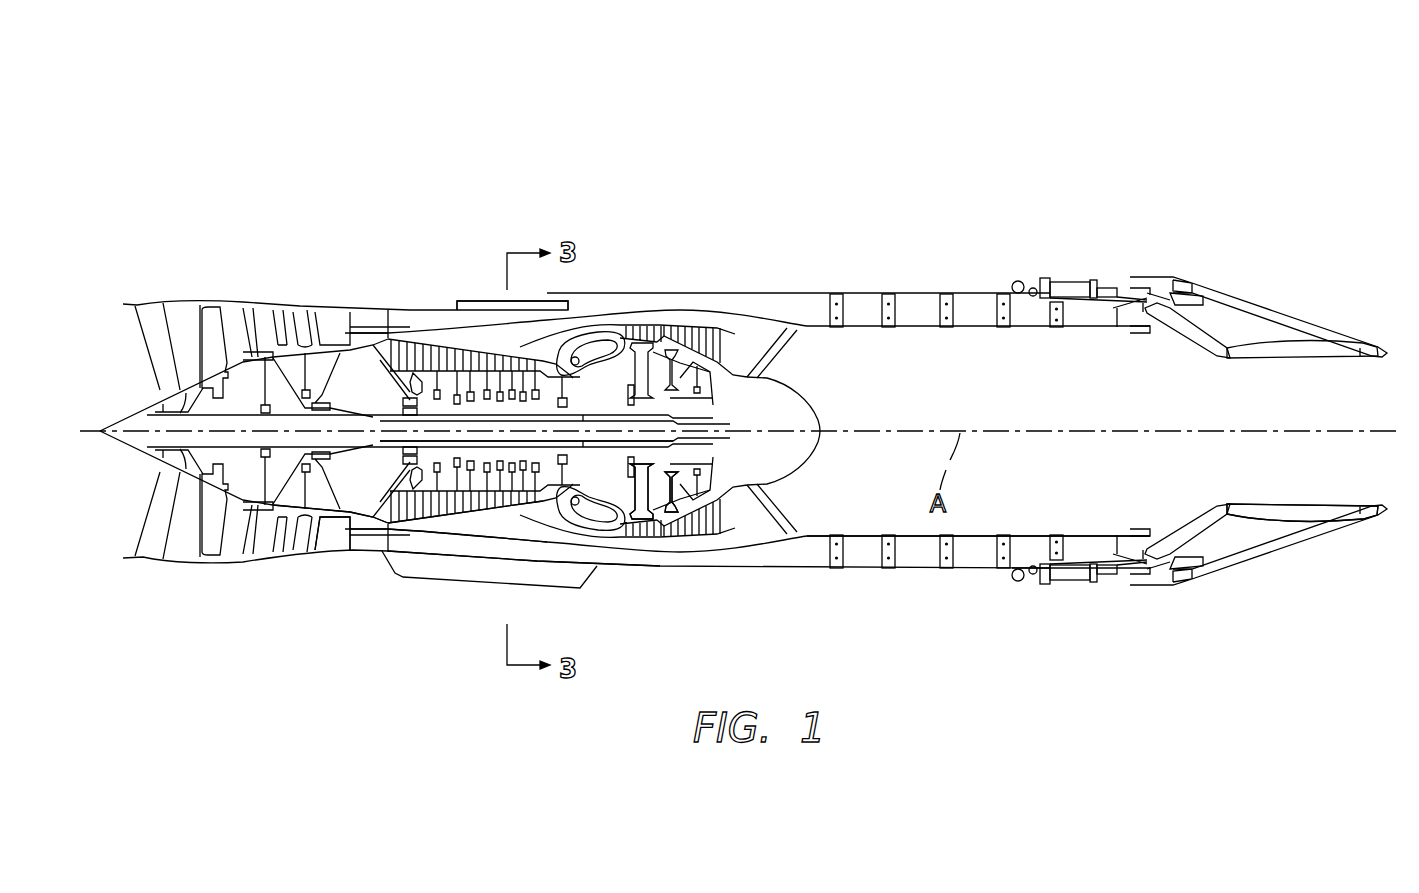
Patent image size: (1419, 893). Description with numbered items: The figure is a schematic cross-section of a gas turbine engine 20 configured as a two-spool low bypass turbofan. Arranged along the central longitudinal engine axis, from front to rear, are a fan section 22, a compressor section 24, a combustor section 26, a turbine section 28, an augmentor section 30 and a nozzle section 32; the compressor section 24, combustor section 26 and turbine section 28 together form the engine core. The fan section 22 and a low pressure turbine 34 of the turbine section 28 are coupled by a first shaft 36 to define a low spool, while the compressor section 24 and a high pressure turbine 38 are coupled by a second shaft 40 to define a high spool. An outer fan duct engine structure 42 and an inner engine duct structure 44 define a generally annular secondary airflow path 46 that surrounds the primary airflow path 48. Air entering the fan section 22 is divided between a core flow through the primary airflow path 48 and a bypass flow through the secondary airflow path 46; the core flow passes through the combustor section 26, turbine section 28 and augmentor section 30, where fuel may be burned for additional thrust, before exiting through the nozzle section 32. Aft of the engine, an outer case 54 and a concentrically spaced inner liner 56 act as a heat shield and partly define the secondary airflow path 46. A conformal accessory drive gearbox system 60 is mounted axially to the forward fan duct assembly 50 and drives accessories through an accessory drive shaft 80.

The gas turbine engine 20 is at (1036, 122).
The fan section 22 is at (125, 229).
The compressor section 24 is at (343, 229).
The combustor section 26 is at (640, 229).
The turbine section 28 is at (640, 229).
The augmentor section 30 is at (720, 229).
The nozzle section 32 is at (855, 229).
The low pressure turbine 34 is at (682, 514).
The first shaft 36 is at (357, 447).
The high pressure turbine 38 is at (641, 500).
The second shaft 40 is at (586, 437).
The outer fan duct engine structure 42 is at (537, 565).
The inner engine duct structure 44 is at (477, 522).
The secondary airflow path 46 is at (423, 542).
The primary airflow path 48 is at (358, 535).
The forward fan duct assembly 50 is at (1151, 597).
The outer case 54 is at (865, 572).
The inner liner 56 is at (1082, 532).
The conformal accessory drive gearbox system 60 is at (443, 580).
The accessory drive shaft 80 is at (547, 294).